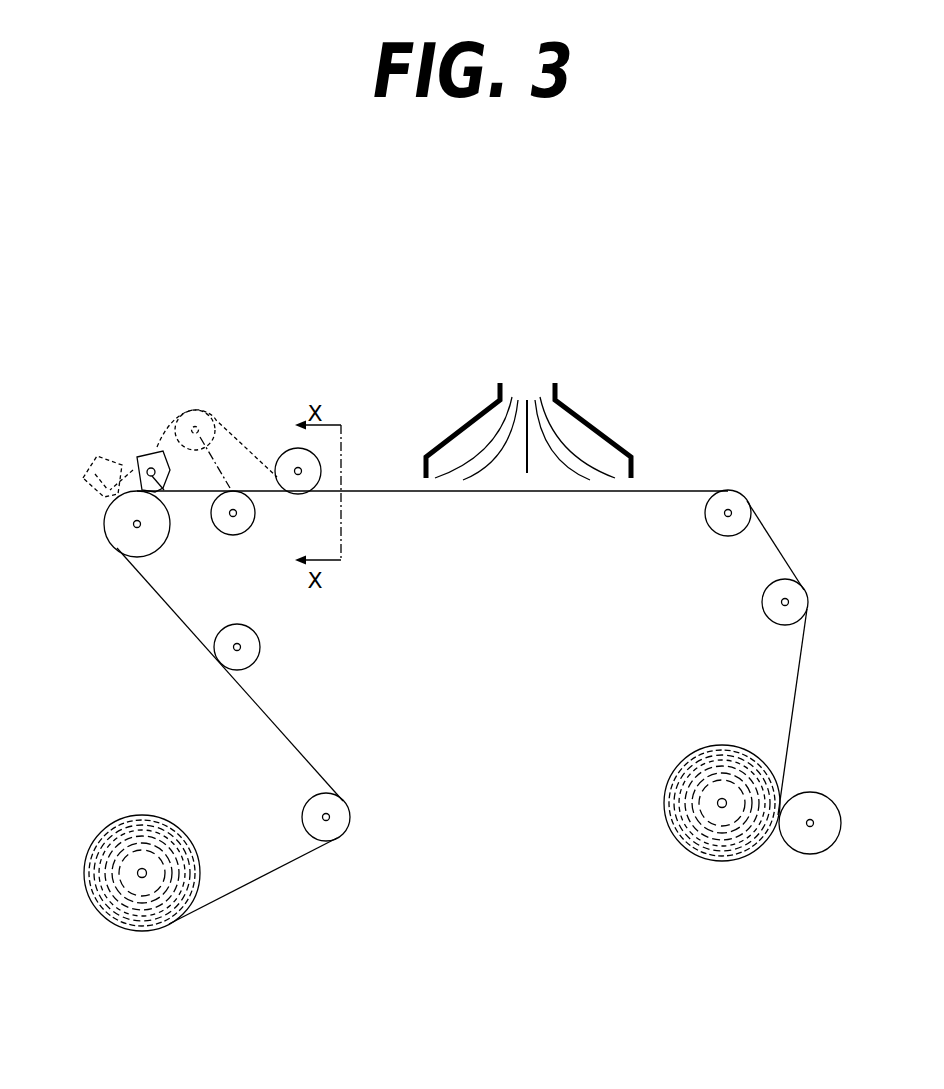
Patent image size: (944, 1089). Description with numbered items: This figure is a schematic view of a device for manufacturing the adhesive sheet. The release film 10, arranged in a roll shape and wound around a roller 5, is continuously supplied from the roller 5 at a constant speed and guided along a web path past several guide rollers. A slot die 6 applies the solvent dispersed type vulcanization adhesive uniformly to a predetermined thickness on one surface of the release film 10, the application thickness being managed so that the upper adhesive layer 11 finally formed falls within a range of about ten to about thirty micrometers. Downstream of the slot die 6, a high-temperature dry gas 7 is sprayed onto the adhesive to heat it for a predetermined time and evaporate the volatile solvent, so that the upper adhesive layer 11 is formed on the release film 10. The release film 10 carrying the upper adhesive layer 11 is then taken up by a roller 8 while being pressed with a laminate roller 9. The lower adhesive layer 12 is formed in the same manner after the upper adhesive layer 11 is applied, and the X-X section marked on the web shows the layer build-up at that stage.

The roller 5 is at (123, 818).
The slot die 6 is at (140, 455).
The high-temperature dry gas 7 is at (540, 397).
The roller 8 is at (702, 745).
The laminate roller 9 is at (790, 850).
The release film 10 is at (662, 487).
The upper adhesive layer 11 is at (462, 707).
The lower adhesive layer 12 is at (462, 707).